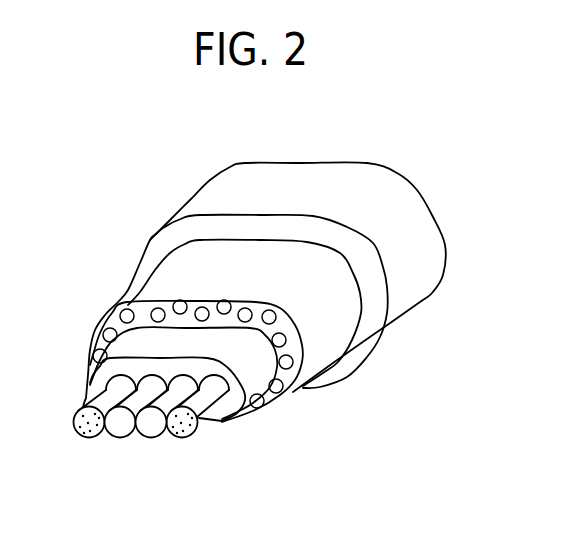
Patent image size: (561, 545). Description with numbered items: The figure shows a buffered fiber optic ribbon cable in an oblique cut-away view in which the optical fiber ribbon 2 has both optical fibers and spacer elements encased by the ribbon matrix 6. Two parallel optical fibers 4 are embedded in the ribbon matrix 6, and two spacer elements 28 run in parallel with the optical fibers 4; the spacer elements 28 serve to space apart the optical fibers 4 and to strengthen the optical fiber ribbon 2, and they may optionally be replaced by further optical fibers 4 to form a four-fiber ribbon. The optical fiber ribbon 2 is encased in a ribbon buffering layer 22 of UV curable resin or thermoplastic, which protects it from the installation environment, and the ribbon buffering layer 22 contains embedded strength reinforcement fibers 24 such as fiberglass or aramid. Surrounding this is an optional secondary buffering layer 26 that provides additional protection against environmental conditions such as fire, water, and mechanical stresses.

The optical fiber ribbon 2 is at (269, 300).
The secondary buffering layer 26 is at (403, 198).
The ribbon buffering layer 22 is at (323, 323).
The embedded strength reinforcement fibers 24 is at (280, 402).
The ribbon matrix 6 is at (228, 412).
The optical fibers 4 is at (92, 420).
The spacer elements 28 is at (153, 422).